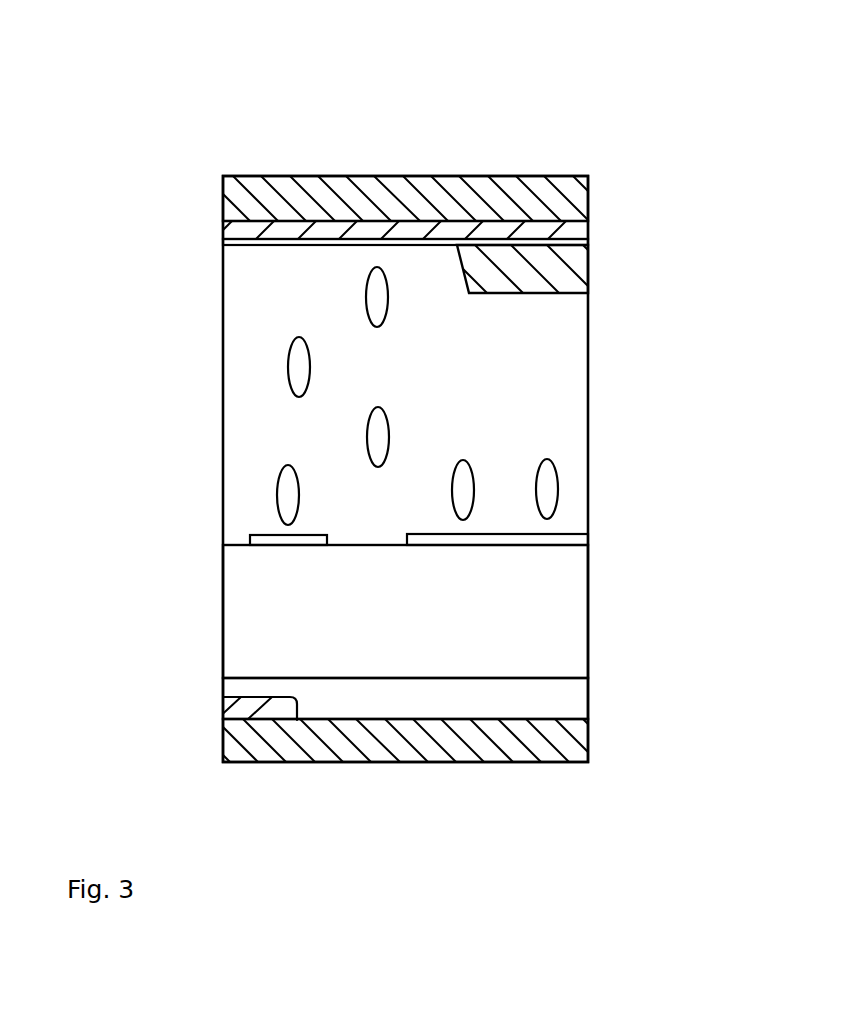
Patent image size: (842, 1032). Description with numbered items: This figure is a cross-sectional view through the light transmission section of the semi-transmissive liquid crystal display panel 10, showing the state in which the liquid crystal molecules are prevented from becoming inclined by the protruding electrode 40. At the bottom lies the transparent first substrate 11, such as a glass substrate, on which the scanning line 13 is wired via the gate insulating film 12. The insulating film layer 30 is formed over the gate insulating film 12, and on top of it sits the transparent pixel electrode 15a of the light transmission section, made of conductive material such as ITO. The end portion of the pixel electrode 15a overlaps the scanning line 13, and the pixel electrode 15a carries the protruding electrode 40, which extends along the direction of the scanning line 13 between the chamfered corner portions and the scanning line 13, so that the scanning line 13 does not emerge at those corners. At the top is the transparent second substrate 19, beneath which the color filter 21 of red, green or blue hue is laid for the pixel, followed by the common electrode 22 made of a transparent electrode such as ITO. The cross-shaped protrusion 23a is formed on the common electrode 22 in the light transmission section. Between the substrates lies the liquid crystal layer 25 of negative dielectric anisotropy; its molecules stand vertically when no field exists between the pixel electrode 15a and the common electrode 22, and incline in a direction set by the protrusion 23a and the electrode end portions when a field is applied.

The semi-transmissive liquid crystal display panel 10 is at (166, 31).
The first substrate 11 is at (422, 760).
The gate insulating film 12 is at (558, 703).
The scanning line 13 is at (238, 707).
The pixel electrode 15a is at (558, 538).
The second substrate 19 is at (452, 175).
The color filter 21 is at (354, 227).
The common electrode 22 is at (582, 242).
The cross-shaped protrusion 23a is at (558, 277).
The liquid crystal layer 25 is at (477, 392).
The insulating film layer 30 is at (558, 643).
The protruding electrode 40 is at (272, 538).